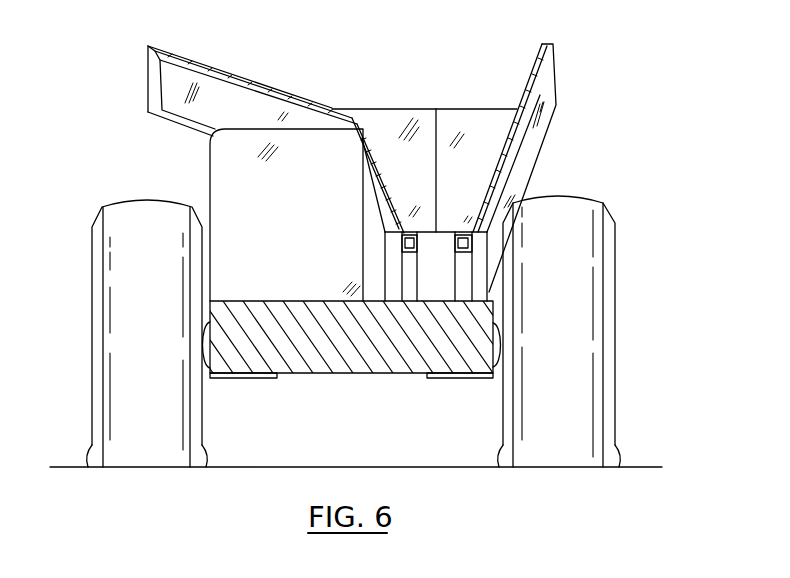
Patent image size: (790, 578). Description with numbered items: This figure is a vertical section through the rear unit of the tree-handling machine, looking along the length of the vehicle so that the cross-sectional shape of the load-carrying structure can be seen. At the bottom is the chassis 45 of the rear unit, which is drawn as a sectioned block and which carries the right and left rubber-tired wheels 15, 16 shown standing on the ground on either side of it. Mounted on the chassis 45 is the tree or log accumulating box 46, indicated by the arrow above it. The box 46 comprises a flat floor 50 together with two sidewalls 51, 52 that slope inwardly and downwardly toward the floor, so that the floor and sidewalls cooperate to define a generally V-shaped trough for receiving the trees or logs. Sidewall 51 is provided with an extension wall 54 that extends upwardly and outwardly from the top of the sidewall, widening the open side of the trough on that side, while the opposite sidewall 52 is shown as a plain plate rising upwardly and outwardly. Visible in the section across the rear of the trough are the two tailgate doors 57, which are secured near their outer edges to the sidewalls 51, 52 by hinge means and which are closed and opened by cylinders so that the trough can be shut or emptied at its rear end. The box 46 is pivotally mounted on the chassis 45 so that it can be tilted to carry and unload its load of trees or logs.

The right rubber-tired wheel 15 is at (610, 302).
The left rubber-tired wheel 16 is at (102, 315).
The chassis 45 is at (377, 368).
The tree or log accumulating box 46 is at (386, 90).
The flat floor 50 is at (443, 231).
The sidewall 51 is at (380, 177).
The sidewall 52 is at (533, 65).
The extension wall 54 is at (227, 72).
The tailgate doors 57 is at (453, 108).